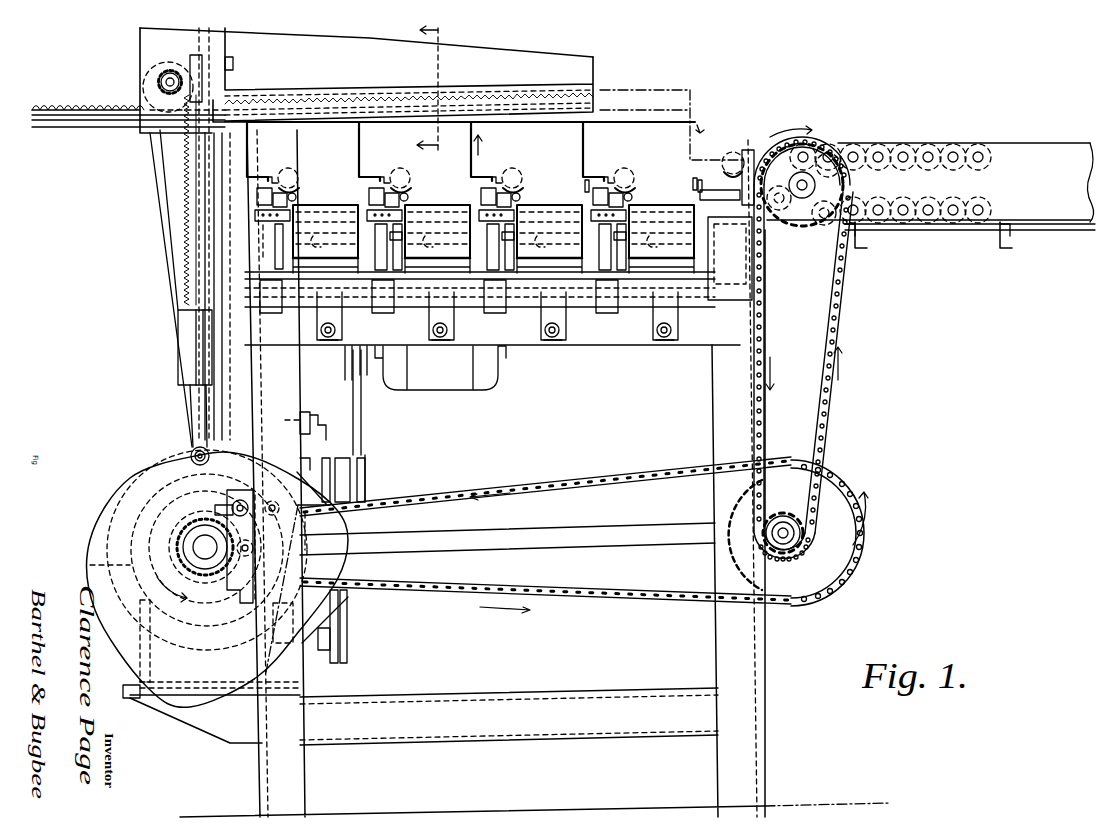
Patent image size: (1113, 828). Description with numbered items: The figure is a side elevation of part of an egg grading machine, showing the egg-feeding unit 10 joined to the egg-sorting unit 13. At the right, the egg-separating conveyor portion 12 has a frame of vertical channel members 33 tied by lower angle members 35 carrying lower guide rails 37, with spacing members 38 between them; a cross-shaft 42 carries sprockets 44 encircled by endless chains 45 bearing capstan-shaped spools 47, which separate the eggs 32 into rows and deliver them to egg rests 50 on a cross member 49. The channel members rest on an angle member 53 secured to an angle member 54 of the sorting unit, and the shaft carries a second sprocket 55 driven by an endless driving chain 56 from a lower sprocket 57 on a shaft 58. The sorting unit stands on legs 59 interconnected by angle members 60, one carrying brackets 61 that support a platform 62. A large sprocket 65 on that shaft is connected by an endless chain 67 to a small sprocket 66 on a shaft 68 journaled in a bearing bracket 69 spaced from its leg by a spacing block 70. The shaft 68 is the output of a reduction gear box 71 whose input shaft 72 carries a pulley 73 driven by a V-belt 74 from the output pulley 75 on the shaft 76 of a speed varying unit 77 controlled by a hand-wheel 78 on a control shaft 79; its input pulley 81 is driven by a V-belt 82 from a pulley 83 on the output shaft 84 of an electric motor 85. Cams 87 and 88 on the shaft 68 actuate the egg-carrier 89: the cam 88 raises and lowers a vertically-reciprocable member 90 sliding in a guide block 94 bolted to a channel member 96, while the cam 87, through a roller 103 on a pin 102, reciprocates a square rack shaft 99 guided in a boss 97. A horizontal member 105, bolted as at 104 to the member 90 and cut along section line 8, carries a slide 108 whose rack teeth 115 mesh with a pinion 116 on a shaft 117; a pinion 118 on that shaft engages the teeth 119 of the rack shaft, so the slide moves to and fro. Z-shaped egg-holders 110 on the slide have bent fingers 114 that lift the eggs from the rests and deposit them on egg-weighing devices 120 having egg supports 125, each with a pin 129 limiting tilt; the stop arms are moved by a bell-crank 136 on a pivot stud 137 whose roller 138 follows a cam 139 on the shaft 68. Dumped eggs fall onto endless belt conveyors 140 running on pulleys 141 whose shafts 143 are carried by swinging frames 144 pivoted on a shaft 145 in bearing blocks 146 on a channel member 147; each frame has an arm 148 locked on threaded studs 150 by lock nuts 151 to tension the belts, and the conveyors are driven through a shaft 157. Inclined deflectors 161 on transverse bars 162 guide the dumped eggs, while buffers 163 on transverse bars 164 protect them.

The section line 8- 8 is at (437, 89).
The egg-feeding unit 10 is at (700, 128).
The egg-separating conveyor portion 12 is at (985, 140).
The egg-sorting unit 13 is at (605, 79).
The eggs 32 is at (296, 165).
The vertical channel members 33 is at (1052, 142).
The lower angle members 35 is at (860, 246).
The lower diverging guide rails 37 is at (952, 230).
The spacing members 38 is at (870, 236).
The cross-shaft 42 is at (806, 180).
The sprockets 44 is at (845, 184).
The endless chains 45 is at (925, 146).
The capstan-shaped rollers or spools 47 is at (945, 146).
The cross member 49 is at (756, 150).
The egg rests 50 is at (720, 195).
The angle member 53 is at (772, 226).
The angle member 54 is at (730, 258).
The second sprocket 55 is at (818, 228).
The endless driving chain 56 is at (836, 318).
The lower sprocket 57 is at (786, 514).
The shaft 58 is at (796, 540).
The legs 59 is at (303, 786).
The angle members 60 is at (262, 765).
The brackets 61 is at (208, 728).
The platform 62 is at (124, 692).
The large sprocket 65 is at (832, 490).
The small sprocket 66 is at (184, 595).
The endless chain 67 is at (583, 475).
The shaft 68 is at (190, 566).
The bearing bracket 69 is at (190, 550).
The spacing block 70 is at (240, 604).
The reduction gear box 71 is at (90, 555).
The input shaft 72 is at (316, 648).
The pulley 73 is at (340, 618).
The V-belt 74 is at (348, 646).
The output pulley 75 is at (338, 455).
The shaft 76 is at (306, 482).
The speed varying unit 77 is at (328, 432).
The hand-wheel 78 is at (305, 412).
The control shaft 79 is at (318, 415).
The input pulley 81 is at (366, 466).
The V-belt 82 is at (362, 412).
The pulley 83 is at (343, 362).
The output shaft 84 is at (364, 376).
The electric motor 85 is at (440, 388).
The cam 87 is at (100, 525).
The cam 88 is at (120, 510).
The egg-carrier 89 is at (476, 44).
The vertically-reciprocable member 90 is at (152, 266).
The guide block 94 is at (234, 184).
The channel member 96 is at (258, 230).
The boss 97 is at (176, 358).
The rack shaft 99 is at (198, 420).
The pin 102 is at (192, 460).
The roller 103 is at (190, 452).
The bolts 104 is at (234, 60).
The horizontal member 105 is at (330, 40).
The slide 108 is at (82, 128).
The egg-holders 110 is at (248, 135).
The bent fingers 114 is at (264, 174).
The rack teeth 115 is at (67, 108).
The pinion 116 is at (152, 62).
The shaft 117 is at (168, 72).
The pinion 118 is at (166, 95).
The teeth 119 is at (182, 206).
The egg-weighing devices 120 is at (432, 196).
The egg support 125 is at (298, 183).
The pin 129 is at (500, 236).
The bell-crank 136 is at (290, 516).
The pivot stud 137 is at (258, 495).
The roller 138 is at (243, 556).
The cam 139 is at (214, 516).
The endless belt conveyor 140 is at (328, 205).
The pulleys 141 is at (349, 256).
The shafts 143 is at (317, 242).
The swinging frames 144 is at (716, 258).
The shaft 145 is at (632, 305).
The bearing blocks 146 is at (272, 314).
The channel member 147 is at (596, 347).
The downwardly projecting arm 148 is at (342, 310).
The threaded studs 150 is at (336, 332).
The lock nuts 151 is at (323, 337).
The shaft 157 is at (542, 535).
The inclined guides or deflectors 161 is at (295, 195).
The transverse bars 162 is at (448, 200).
The buffers 163 is at (586, 183).
The transverse bars 164 is at (697, 184).